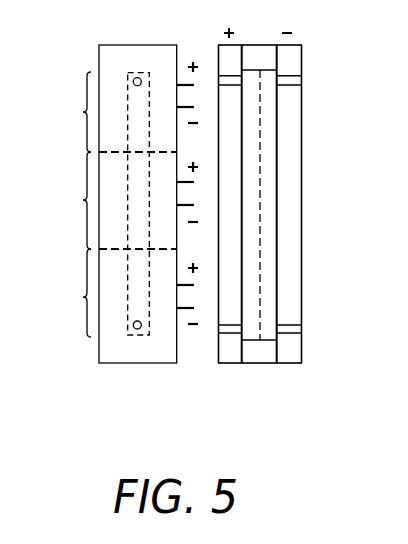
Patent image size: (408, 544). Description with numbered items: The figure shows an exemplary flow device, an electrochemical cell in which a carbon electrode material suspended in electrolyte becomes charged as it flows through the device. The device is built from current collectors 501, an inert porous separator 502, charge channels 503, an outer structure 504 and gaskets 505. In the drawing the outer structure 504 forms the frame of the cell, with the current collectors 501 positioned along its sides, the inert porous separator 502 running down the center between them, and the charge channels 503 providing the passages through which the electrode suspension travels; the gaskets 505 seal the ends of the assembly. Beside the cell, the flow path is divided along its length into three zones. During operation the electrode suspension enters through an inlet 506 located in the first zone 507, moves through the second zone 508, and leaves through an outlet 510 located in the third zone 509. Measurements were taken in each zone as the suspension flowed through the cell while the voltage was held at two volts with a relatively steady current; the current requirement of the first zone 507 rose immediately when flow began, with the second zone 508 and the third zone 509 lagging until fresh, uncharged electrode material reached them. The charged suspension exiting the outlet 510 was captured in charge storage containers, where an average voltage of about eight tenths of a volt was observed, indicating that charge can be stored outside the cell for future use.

The current collectors 501 is at (245, 118).
The inert porous separator 502 is at (272, 170).
The charge channels 503 is at (250, 182).
The outer structure 504 is at (233, 290).
The gaskets 505 is at (265, 352).
The inlet 506 is at (127, 80).
The zone 1 507 is at (66, 112).
The zone 2 508 is at (109, 200).
The zone 3 509 is at (109, 293).
The outlet 510 is at (127, 328).